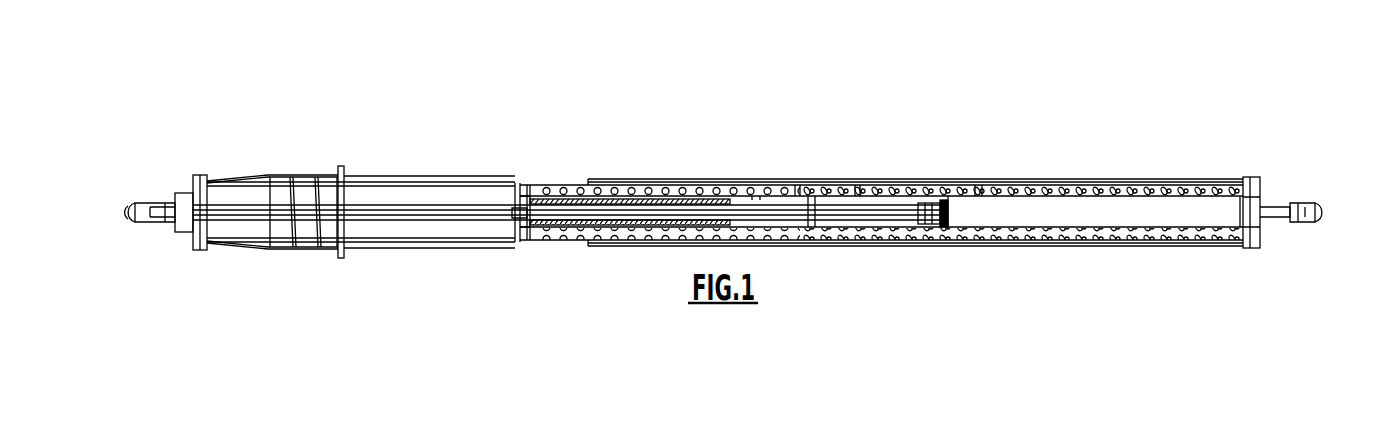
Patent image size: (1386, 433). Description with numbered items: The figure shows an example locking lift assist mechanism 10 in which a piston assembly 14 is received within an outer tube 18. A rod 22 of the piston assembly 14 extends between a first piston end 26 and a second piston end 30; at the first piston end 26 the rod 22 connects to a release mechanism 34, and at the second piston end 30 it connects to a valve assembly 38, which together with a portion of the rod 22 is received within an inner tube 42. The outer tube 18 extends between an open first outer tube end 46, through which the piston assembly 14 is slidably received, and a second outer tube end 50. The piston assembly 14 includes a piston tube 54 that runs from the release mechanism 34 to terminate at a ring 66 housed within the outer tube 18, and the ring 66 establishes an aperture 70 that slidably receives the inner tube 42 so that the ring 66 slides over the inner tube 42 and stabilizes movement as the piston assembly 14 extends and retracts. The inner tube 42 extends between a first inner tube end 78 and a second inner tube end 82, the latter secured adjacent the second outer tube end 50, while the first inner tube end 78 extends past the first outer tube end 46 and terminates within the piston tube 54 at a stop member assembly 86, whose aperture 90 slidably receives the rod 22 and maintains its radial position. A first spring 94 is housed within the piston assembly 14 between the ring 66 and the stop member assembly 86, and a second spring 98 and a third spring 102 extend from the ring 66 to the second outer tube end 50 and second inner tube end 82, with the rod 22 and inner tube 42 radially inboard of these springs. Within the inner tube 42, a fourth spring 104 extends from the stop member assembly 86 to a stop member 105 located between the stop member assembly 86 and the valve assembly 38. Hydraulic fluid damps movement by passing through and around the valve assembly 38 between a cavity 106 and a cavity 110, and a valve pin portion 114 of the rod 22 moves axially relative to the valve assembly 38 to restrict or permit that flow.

The lift assist mechanism 10 is at (1245, 128).
The piston assembly 14 is at (443, 140).
The outer tube 18 is at (953, 180).
The rod 22 is at (440, 203).
The first piston end 26 is at (186, 180).
The second piston end 30 is at (982, 217).
The release mechanism 34 is at (266, 166).
The valve assembly 38 is at (935, 177).
The inner tube 42 is at (983, 180).
The first outer tube end 46 is at (582, 176).
The second outer tube end 50 is at (1270, 181).
The piston tube 54 is at (487, 180).
The ring 66 is at (797, 185).
The aperture 70 is at (812, 185).
The first inner tube end 78 is at (505, 180).
The second inner tube end 82 is at (1275, 195).
The stop member assembly 86 is at (543, 197).
The aperture 90 is at (525, 207).
The first spring 94 is at (722, 185).
The second spring 98 is at (1062, 180).
The third spring 102 is at (1092, 180).
The fourth spring 104 is at (673, 185).
The stop member 105 is at (755, 185).
The cavity 106 is at (858, 185).
The cavity 110 is at (1132, 214).
The valve pin portion 114 is at (917, 200).